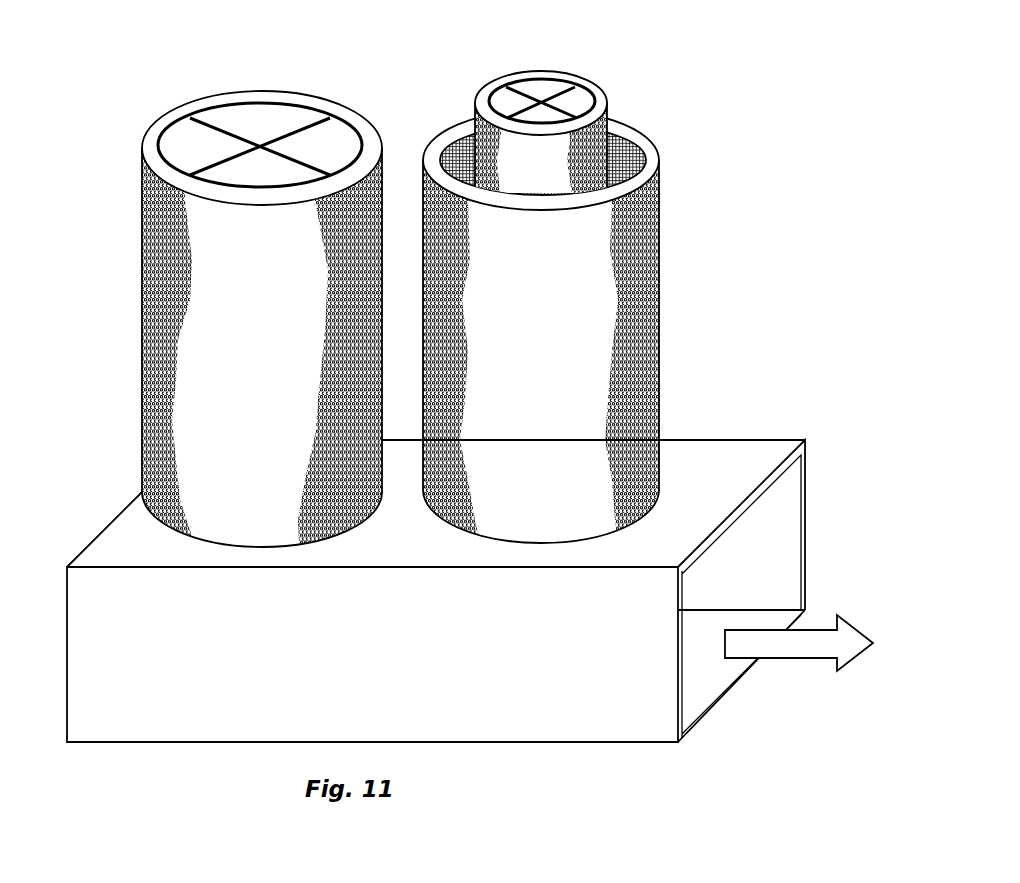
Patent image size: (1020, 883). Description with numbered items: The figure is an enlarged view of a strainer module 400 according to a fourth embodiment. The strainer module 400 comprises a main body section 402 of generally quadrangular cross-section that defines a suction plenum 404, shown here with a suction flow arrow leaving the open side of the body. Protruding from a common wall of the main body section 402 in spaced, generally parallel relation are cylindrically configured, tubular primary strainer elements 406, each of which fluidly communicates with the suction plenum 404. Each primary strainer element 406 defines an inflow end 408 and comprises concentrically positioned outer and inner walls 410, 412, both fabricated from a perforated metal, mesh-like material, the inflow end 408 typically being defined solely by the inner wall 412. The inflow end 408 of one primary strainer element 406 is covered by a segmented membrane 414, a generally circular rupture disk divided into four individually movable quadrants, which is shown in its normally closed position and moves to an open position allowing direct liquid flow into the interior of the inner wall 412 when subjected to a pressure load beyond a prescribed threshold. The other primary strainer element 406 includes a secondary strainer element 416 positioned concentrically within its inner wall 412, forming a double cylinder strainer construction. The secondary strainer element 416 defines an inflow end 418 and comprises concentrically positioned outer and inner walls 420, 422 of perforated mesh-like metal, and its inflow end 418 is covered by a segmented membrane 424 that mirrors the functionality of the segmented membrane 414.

The strainer module 400 is at (462, 376).
The main body section 402 is at (474, 570).
The suction plenum 404 is at (775, 523).
The primary strainer element 406 is at (393, 288).
The inflow end 408 is at (640, 157).
The outer wall 410 is at (143, 203).
The inner wall 412 is at (471, 133).
The segmented membrane 414 is at (265, 118).
The secondary strainer element 416 is at (595, 103).
The inflow end 418 is at (529, 78).
The outer wall 420 is at (608, 133).
The inner wall 422 is at (576, 104).
The segmented membrane 424 is at (606, 95).